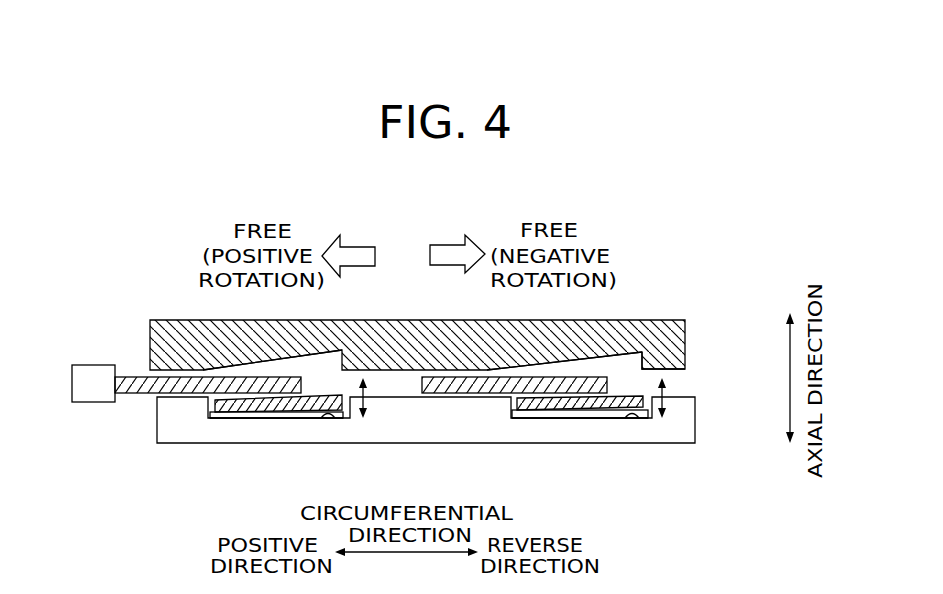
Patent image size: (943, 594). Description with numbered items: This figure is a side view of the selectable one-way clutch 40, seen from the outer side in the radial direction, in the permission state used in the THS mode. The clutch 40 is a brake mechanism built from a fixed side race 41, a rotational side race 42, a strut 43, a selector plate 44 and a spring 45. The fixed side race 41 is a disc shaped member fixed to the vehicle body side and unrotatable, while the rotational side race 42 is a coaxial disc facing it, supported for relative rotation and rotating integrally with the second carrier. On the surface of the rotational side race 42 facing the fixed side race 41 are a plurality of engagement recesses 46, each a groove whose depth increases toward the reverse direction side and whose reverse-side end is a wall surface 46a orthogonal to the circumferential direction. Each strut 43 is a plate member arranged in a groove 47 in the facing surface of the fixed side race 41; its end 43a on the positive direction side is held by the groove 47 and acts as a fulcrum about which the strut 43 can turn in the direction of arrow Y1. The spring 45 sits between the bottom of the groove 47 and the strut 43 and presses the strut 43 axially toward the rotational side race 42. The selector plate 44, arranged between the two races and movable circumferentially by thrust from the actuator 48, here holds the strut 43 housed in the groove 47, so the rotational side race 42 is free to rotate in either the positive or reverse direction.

The selectable one-way clutch 40 is at (188, 274).
The fixed side race 41 is at (150, 444).
The rotational side race 42 is at (141, 333).
The strut 43 is at (257, 413).
The end 43a is at (222, 420).
The selector plate 44 is at (127, 394).
The spring 45 is at (290, 419).
The engagement recess 46 is at (333, 352).
The wall surface 46a is at (305, 355).
The groove 47 is at (330, 419).
The actuator 48 is at (88, 403).
The arrow Y1 is at (526, 402).